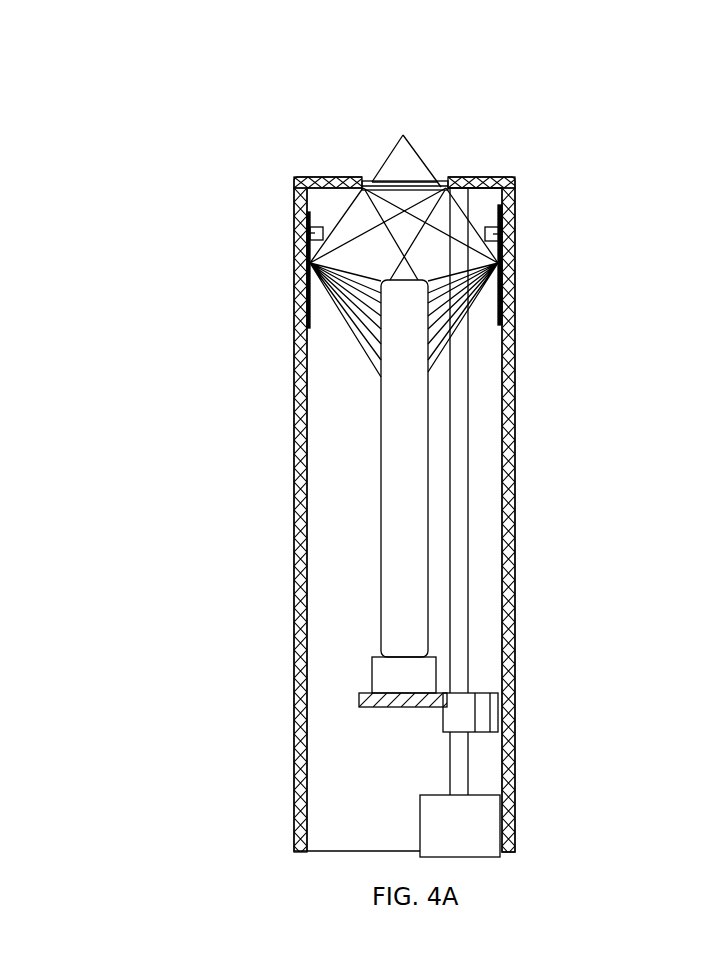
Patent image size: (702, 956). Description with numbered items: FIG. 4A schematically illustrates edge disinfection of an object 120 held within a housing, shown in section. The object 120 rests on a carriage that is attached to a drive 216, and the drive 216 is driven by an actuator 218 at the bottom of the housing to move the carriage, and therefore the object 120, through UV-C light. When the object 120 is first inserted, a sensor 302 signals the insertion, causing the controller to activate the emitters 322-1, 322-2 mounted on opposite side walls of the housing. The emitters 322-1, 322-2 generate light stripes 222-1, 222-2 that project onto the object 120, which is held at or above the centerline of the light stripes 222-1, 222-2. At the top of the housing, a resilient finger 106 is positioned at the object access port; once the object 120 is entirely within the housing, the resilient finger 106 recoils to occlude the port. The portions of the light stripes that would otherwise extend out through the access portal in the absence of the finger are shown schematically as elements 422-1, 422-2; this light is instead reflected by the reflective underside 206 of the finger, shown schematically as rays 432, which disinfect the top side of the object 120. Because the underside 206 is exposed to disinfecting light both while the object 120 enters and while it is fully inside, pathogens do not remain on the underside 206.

The resilient finger 106 is at (420, 175).
The object 120 is at (380, 510).
The reflective underside 206 is at (380, 205).
The drive 216 is at (458, 495).
The actuator 218 is at (478, 808).
The light stripe 222-1 is at (463, 325).
The light stripe 222-2 is at (352, 335).
The sensor 302 is at (307, 213).
The emitter 322-1 is at (500, 266).
The emitter 322-2 is at (307, 265).
The portion of light stripe 422-1 is at (423, 152).
The portion of light stripe 422-2 is at (385, 153).
The rays 432 is at (472, 208).